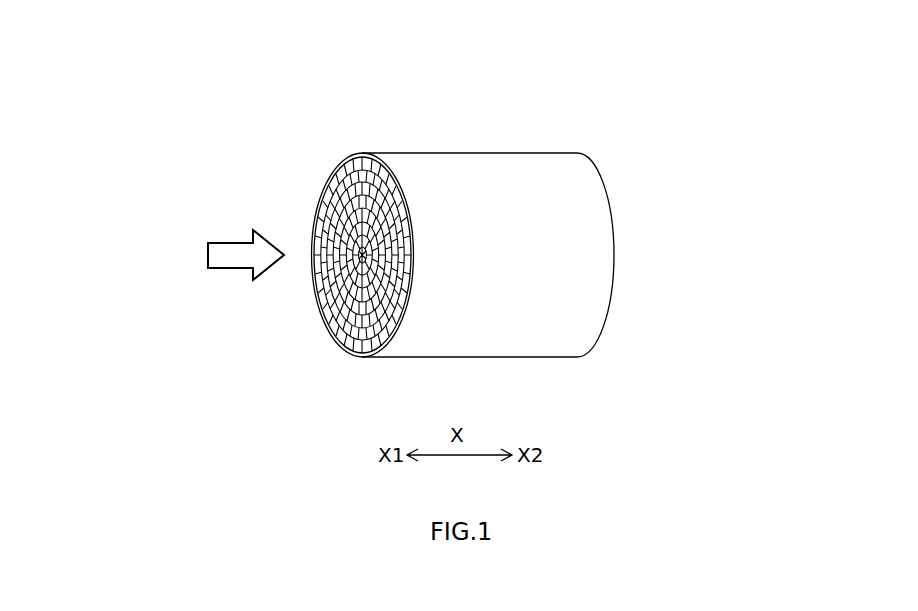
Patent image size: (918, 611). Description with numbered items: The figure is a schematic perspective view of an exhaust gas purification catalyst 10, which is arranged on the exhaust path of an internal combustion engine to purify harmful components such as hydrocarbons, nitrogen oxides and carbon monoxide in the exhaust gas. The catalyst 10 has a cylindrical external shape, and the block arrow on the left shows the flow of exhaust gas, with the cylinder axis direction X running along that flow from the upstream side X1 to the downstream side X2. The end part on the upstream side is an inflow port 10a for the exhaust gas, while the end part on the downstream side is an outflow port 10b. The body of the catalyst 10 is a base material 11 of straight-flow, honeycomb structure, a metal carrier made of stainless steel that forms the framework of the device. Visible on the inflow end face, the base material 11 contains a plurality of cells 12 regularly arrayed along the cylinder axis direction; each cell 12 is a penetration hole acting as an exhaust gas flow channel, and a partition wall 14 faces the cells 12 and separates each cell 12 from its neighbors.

The exhaust gas purification catalyst 10 is at (642, 106).
The inflow port 10a is at (355, 152).
The outflow port 10b is at (587, 158).
The base material 11 is at (502, 160).
The cell 12 is at (312, 312).
The partition wall 14 is at (337, 347).